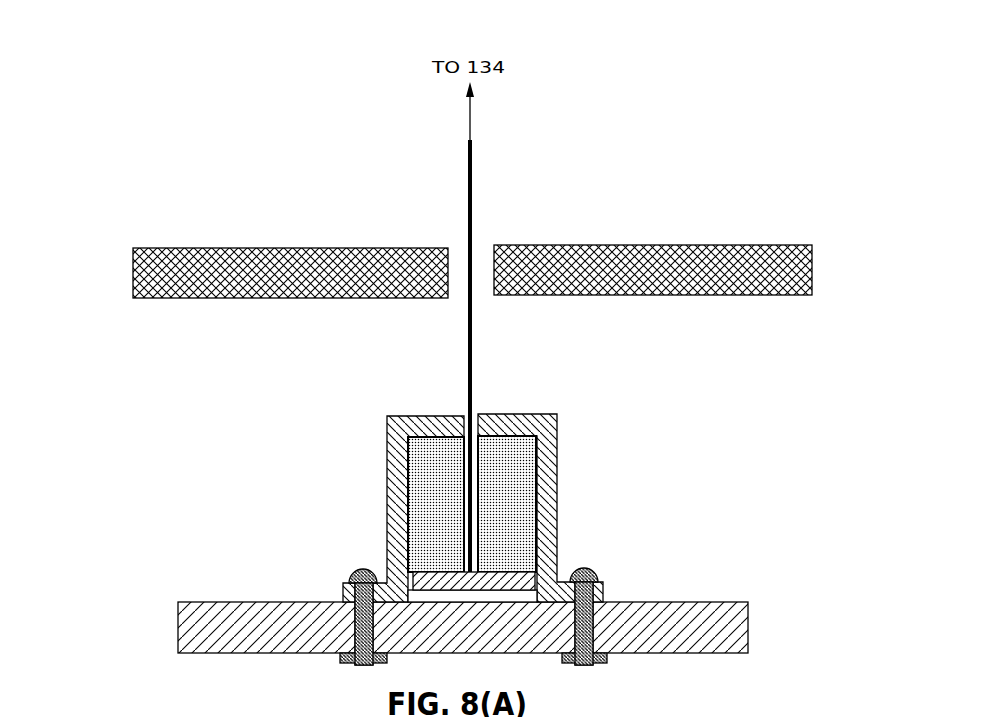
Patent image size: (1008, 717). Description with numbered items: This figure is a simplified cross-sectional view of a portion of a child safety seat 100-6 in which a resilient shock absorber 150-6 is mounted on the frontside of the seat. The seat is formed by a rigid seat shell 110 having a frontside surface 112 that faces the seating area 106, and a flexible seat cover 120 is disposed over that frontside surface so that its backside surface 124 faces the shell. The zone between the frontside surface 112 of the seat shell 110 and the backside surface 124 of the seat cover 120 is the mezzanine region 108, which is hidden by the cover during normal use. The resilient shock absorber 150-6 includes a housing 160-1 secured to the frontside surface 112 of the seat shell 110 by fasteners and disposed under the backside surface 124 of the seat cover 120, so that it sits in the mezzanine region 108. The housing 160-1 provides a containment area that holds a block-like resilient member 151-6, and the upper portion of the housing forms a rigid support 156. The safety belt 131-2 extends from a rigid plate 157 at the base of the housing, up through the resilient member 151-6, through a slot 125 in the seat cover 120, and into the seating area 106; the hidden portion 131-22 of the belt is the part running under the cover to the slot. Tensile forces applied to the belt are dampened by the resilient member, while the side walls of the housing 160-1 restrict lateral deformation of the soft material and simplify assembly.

The safety seat 100-6 is at (183, 177).
The seating area 106 is at (297, 140).
The mezzanine region 108 is at (290, 426).
The seat shell 110 is at (685, 585).
The frontside surface 112 is at (615, 600).
The seat cover 120 is at (747, 218).
The backside surface 124 is at (757, 295).
The slot 125 is at (482, 248).
The safety belt 131-2 is at (468, 192).
The hidden portion 131-22 is at (468, 373).
The resilient shock absorber 150-6 is at (315, 508).
The resilient member 151-6 is at (508, 483).
The rigid support 156 is at (423, 442).
The rigid plate 157 is at (497, 582).
The housing 160-1 is at (532, 405).